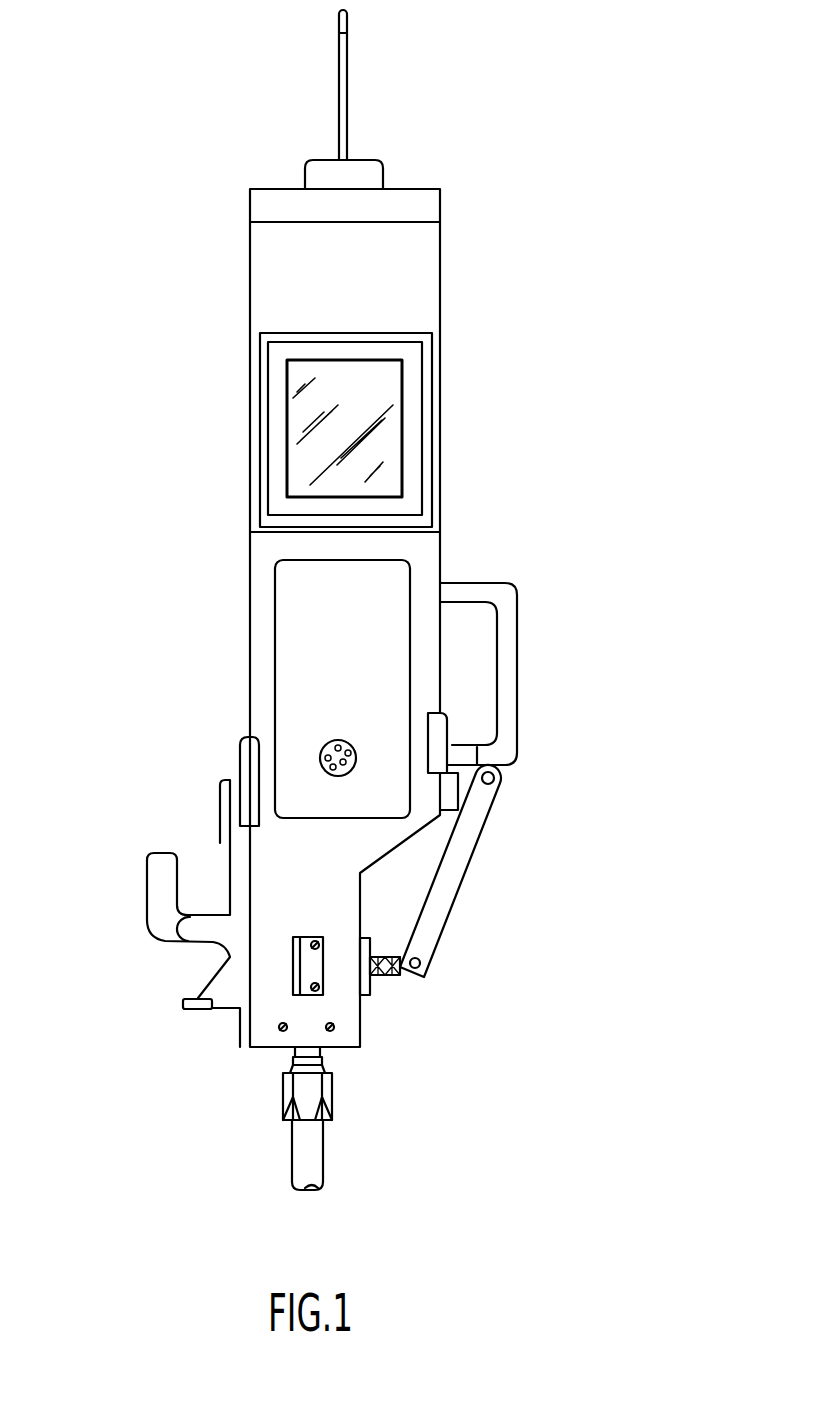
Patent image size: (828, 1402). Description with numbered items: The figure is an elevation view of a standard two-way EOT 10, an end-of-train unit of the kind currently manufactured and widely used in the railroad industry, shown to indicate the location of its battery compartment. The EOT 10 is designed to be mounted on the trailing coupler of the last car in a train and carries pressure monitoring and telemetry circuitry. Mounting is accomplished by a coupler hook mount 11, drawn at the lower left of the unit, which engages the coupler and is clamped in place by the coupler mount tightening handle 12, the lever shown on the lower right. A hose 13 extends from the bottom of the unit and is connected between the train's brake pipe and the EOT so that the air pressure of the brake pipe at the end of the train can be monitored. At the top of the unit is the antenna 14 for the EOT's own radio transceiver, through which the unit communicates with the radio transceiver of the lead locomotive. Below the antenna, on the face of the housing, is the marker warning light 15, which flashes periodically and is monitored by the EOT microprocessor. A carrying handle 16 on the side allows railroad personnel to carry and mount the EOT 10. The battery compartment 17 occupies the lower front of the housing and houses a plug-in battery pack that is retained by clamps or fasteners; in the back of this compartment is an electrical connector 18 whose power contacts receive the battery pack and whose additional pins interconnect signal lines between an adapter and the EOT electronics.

The two-way EOT 10 is at (586, 238).
The coupler hook mount 11 is at (147, 883).
The coupler mount tightening handle 12 is at (501, 778).
The hose 13 is at (323, 1137).
The antenna 14 is at (340, 68).
The marker warning light 15 is at (287, 412).
The carrying handle 16 is at (517, 605).
The battery compartment 17 is at (369, 687).
The electrical connector 18 is at (351, 745).